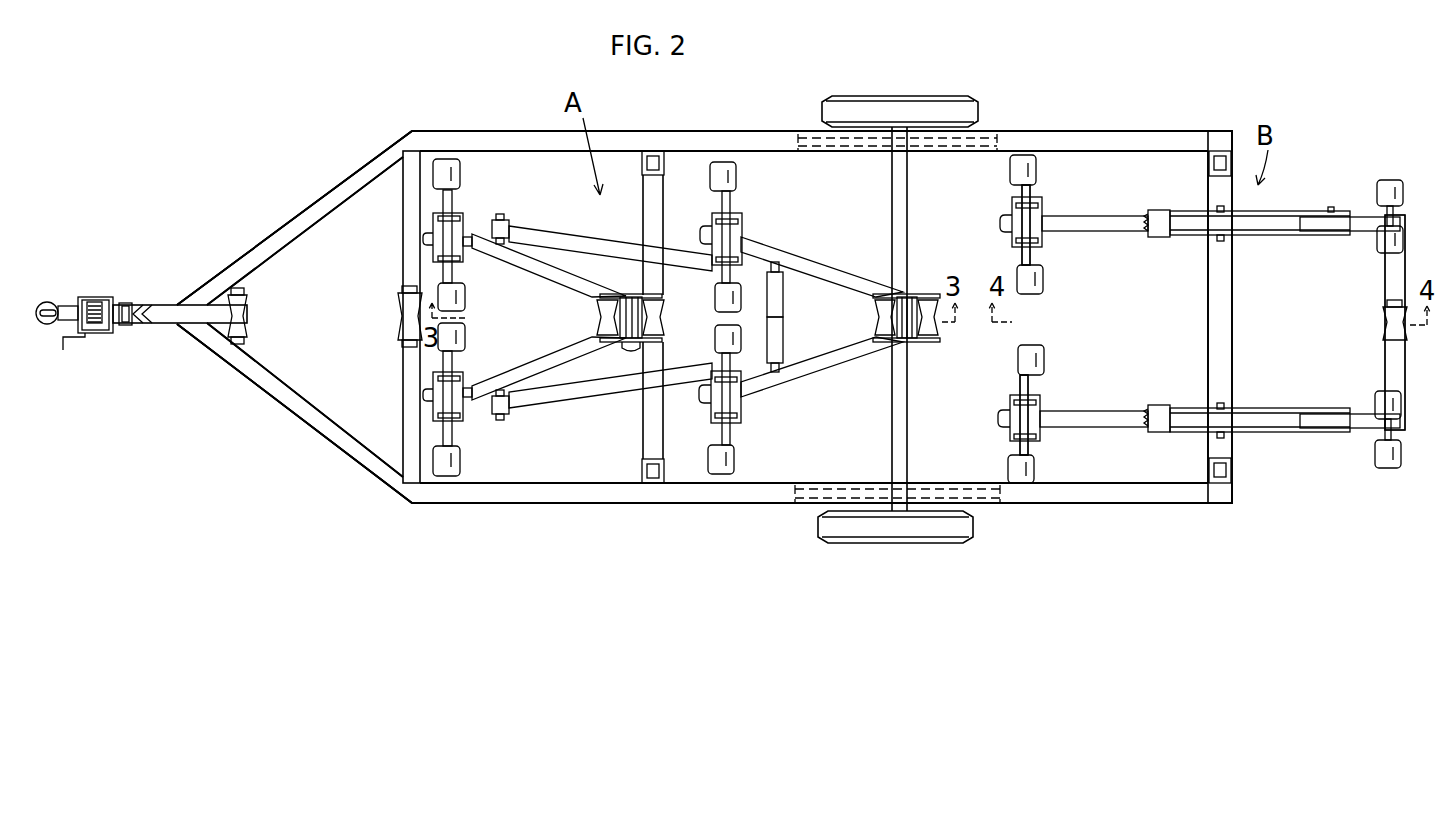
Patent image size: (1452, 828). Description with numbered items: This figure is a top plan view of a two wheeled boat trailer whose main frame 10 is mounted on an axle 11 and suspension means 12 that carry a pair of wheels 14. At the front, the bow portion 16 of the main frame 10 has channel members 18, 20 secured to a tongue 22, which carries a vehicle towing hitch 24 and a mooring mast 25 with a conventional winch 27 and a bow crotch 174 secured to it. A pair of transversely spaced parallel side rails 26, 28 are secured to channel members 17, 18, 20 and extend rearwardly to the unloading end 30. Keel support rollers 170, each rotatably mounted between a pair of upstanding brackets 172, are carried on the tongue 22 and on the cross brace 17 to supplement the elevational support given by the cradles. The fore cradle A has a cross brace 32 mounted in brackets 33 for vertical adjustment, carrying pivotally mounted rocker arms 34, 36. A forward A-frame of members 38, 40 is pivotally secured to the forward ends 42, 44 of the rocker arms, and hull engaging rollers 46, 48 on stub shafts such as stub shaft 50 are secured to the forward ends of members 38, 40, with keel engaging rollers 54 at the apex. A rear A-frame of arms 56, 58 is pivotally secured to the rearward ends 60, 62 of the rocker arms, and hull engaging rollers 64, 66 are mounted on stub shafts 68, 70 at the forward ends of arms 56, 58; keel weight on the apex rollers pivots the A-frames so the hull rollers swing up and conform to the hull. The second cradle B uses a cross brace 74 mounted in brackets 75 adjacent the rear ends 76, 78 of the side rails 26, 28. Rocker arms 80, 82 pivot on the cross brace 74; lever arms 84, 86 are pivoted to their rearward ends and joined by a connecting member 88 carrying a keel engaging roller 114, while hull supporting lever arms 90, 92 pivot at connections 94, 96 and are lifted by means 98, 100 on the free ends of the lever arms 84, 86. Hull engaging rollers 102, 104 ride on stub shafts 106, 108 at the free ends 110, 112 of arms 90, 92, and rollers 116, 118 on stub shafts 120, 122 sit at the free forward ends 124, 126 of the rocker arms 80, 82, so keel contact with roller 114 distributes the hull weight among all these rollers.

The main frame 10 is at (565, 504).
The axle 11 is at (907, 452).
The suspension means 12 is at (968, 152).
The wheels 14 is at (952, 112).
The bow portion 16 is at (284, 442).
The channel member 17 is at (403, 375).
The channel member 18 is at (298, 220).
The channel member 20 is at (350, 447).
The tongue 22 is at (195, 312).
The vehicle towing hitch 24 is at (60, 308).
The mooring mast 25 is at (130, 306).
The side rail 26 is at (710, 140).
The winch 27 is at (105, 322).
The side rail 28 is at (710, 505).
The unloading end 30 is at (1333, 109).
The cross brace 32 is at (650, 440).
The brackets 33 is at (648, 158).
The rocker arm 34 is at (616, 250).
The rocker arm 36 is at (582, 396).
The A-frame member 38 is at (540, 262).
The A-frame member 40 is at (548, 372).
The forward end of rocker arm 42 is at (493, 228).
The forward end of rocker arm 44 is at (499, 418).
The hull engaging roller 46 is at (446, 162).
The hull engaging roller 48 is at (466, 338).
The stub shaft 50 is at (440, 216).
The keel engaging rollers 54 is at (628, 344).
The arm of rear A-frame 56 is at (835, 270).
The arm of rear A-frame 58 is at (835, 372).
The rearward end of rocker arm 60 is at (783, 290).
The rearward end of rocker arm 62 is at (783, 352).
The hull engaging roller 64 is at (718, 175).
The hull engaging roller 66 is at (718, 338).
The stub shaft 68 is at (722, 230).
The stub shaft 70 is at (738, 422).
The cross brace 74 is at (1222, 455).
The brackets 75 is at (1215, 162).
The rear end of side rail 76 is at (1232, 133).
The rear end of side rail 78 is at (1226, 504).
The rocker arm 80 is at (1090, 218).
The rocker arm 82 is at (1095, 428).
The lever arm 84 is at (1290, 236).
The lever arm 86 is at (1285, 432).
The connecting member 88 is at (1400, 368).
The hull supporting lever arm 90 is at (1315, 222).
The hull supporting lever arm 92 is at (1315, 414).
The pivotal connection 94 is at (1155, 212).
The pivotal connection 96 is at (1158, 434).
The lifting means 98 is at (1230, 238).
The lifting means 100 is at (1225, 410).
The hull engaging roller 102 is at (1400, 192).
The hull engaging roller 104 is at (1400, 462).
The stub shaft 106 is at (1385, 238).
The stub shaft 108 is at (1384, 432).
The free end of lever arm 110 is at (1388, 214).
The free end of lever arm 112 is at (1378, 410).
The keel engaging roller 114 is at (1385, 330).
The hull engaging roller 116 is at (1025, 170).
The hull engaging roller 118 is at (1018, 360).
The stub shaft 120 is at (1037, 205).
The stub shaft 122 is at (1040, 455).
The free forward end of rocker arm 124 is at (1010, 222).
The free forward end of rocker arm 126 is at (1010, 414).
The keel support roller 170 is at (248, 333).
The upstanding brackets 172 is at (246, 292).
The bow crotch 174 is at (148, 304).